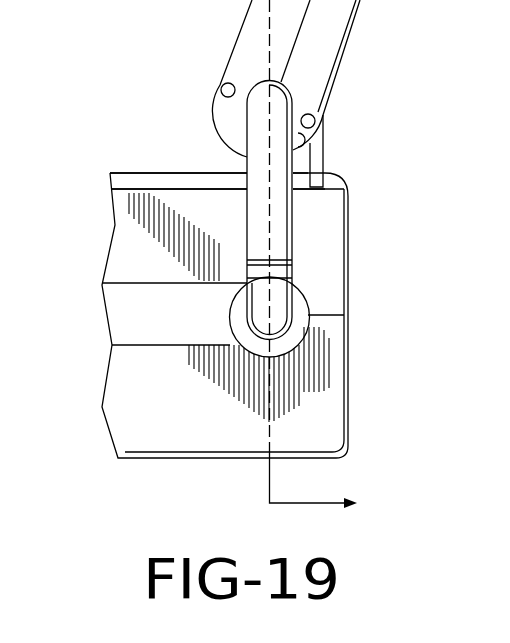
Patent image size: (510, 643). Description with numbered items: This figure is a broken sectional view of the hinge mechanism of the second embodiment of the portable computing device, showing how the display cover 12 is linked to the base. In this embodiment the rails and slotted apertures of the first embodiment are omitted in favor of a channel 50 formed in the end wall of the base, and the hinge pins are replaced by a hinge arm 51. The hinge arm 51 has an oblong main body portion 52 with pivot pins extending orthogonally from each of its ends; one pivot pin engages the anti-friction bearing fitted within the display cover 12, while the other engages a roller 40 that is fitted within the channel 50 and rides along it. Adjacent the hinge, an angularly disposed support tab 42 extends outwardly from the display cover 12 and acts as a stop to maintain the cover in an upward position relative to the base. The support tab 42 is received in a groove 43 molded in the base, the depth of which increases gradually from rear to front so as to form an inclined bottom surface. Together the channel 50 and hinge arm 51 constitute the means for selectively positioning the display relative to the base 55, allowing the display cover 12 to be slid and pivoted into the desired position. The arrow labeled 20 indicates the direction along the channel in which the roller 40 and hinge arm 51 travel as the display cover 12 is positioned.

The display cover 12 is at (327, 43).
The direction of movement 20 is at (327, 259).
The roller 40 is at (302, 300).
The support tabs 42 is at (315, 162).
The grooves 43 is at (213, 188).
The channel 50 is at (130, 284).
The hinge arm 51 is at (278, 193).
The oblong main body portion 52 is at (278, 238).
The means for selectively positioning the display relative to the base 55 is at (309, 351).